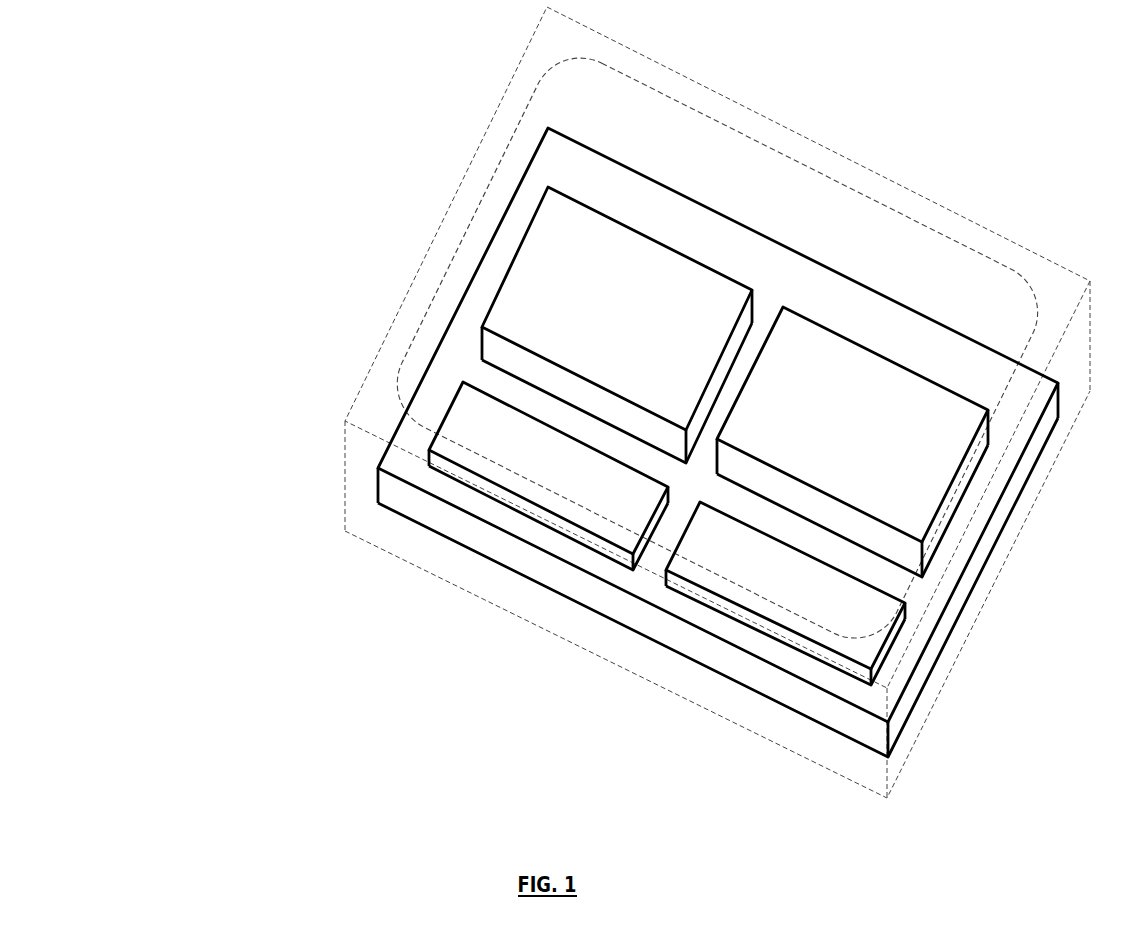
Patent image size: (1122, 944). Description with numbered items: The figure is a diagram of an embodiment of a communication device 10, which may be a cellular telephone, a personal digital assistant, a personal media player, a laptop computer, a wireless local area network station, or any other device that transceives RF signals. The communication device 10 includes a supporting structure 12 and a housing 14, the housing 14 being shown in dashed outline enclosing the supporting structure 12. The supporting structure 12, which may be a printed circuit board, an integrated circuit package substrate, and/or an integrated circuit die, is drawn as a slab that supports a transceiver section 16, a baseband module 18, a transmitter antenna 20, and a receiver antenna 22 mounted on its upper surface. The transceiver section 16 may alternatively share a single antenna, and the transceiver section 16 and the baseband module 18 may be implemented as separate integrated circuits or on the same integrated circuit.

The communication device 10 is at (593, 402).
The supporting structure 12 is at (369, 494).
The housing 14 is at (305, 283).
The transceiver section 16 is at (852, 442).
The baseband module 18 is at (617, 325).
The transmitter antenna 20 is at (785, 593).
The receiver antenna 22 is at (548, 476).